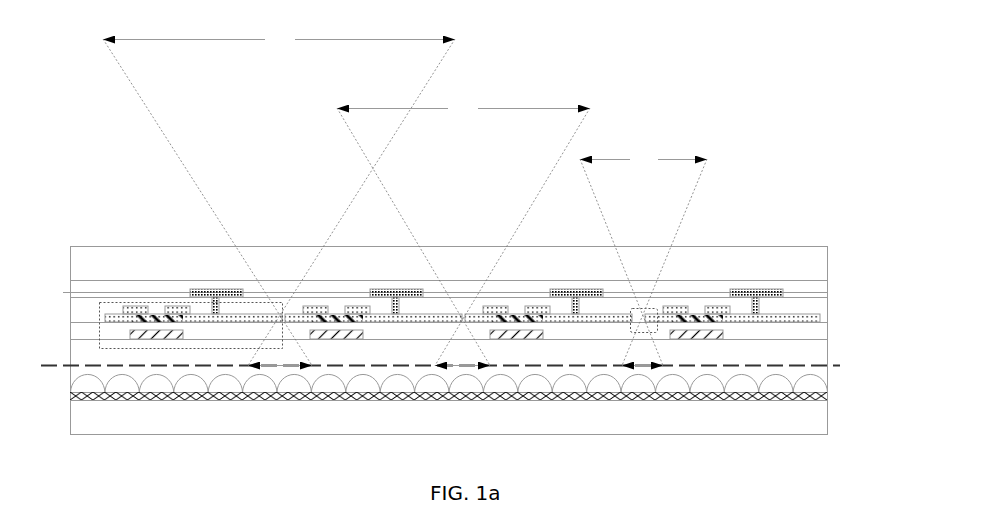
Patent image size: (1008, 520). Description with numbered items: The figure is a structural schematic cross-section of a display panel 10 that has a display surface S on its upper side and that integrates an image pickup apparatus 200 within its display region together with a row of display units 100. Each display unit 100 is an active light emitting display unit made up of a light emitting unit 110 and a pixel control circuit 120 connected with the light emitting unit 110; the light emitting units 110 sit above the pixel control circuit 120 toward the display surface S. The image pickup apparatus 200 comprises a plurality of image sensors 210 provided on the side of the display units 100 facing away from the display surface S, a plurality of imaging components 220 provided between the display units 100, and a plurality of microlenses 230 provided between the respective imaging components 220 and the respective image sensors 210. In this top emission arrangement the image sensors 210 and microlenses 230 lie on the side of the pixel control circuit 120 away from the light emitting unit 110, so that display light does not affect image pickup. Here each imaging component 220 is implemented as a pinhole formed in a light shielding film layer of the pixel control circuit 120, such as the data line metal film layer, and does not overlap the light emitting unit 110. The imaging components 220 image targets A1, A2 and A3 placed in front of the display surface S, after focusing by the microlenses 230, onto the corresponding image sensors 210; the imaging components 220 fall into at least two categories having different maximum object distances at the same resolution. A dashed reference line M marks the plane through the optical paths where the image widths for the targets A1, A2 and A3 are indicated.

The display panel 10 is at (462, 462).
The display unit 100 is at (40, 283).
The light emitting unit 110 is at (433, 300).
The pixel control circuit 120 is at (88, 330).
The image pickup apparatus 200 is at (884, 322).
The image sensor 210 is at (827, 398).
The imaging component 220 is at (657, 328).
The microlens 230 is at (812, 382).
The display surface S is at (798, 245).
The reference plane M is at (430, 368).
The imaging target A1 is at (279, 198).
The imaging target A2 is at (463, 232).
The imaging target A3 is at (643, 258).